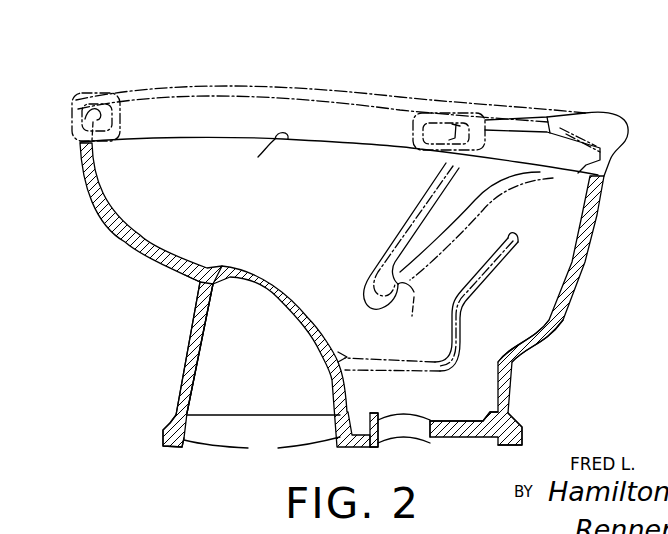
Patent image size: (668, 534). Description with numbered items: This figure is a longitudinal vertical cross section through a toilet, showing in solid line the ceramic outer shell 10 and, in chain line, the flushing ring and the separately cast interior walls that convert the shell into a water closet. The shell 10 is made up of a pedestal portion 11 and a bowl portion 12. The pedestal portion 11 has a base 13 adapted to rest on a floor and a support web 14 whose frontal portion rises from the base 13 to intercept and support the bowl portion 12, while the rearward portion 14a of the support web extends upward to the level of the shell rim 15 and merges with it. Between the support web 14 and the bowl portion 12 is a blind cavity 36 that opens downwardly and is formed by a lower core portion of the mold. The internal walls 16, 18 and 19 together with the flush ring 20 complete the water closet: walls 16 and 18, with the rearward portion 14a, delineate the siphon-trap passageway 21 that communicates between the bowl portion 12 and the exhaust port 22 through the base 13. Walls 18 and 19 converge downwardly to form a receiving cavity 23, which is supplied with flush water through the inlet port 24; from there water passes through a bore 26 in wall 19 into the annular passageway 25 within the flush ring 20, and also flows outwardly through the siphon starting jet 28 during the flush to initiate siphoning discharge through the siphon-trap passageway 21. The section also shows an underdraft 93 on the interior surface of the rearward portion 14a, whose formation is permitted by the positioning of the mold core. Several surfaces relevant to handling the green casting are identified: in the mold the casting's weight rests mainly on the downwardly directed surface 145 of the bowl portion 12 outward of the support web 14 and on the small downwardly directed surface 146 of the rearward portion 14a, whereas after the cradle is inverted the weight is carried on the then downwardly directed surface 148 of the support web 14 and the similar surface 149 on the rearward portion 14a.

The outer shell 10 is at (590, 241).
The pedestal portion 11 is at (178, 390).
The bowl portion 12 is at (101, 209).
The base 13 is at (262, 449).
The support web 14 is at (196, 356).
The rearward portion of the support web 14a is at (553, 323).
The shell rim 15 is at (260, 152).
The internal wall 16 is at (485, 271).
The internal wall 18 is at (432, 247).
The internal wall 19 is at (412, 189).
The flush ring 20 is at (200, 87).
The siphon-trap passageway 21 is at (449, 285).
The exhaust port 22 is at (397, 425).
The receiving cavity 23 is at (425, 220).
The inlet port 24 is at (589, 120).
The annular passageway 25 is at (72, 110).
The bore 26 is at (491, 112).
The siphon starting jet 28 is at (410, 310).
The blind cavity 36 is at (268, 368).
The underdraft 93 is at (497, 378).
The downwardly directed surface 145 is at (158, 272).
The downwardly directed surface 146 is at (524, 344).
The downwardly directed surface 148 is at (200, 322).
The downwardly directed surface 149 is at (510, 386).